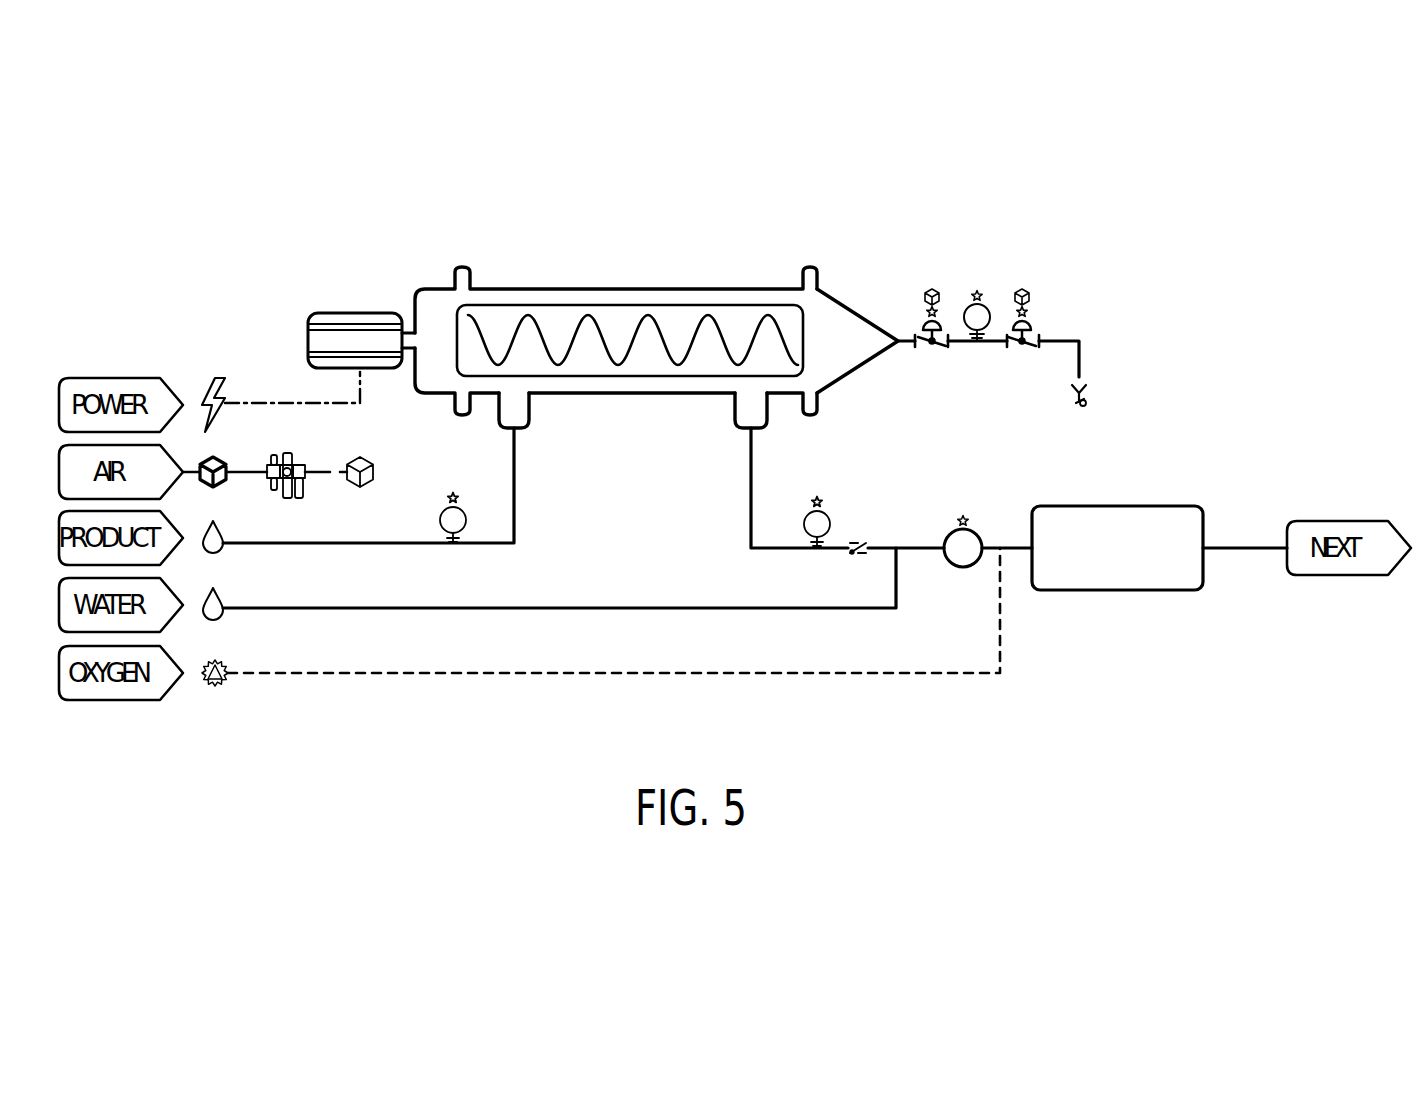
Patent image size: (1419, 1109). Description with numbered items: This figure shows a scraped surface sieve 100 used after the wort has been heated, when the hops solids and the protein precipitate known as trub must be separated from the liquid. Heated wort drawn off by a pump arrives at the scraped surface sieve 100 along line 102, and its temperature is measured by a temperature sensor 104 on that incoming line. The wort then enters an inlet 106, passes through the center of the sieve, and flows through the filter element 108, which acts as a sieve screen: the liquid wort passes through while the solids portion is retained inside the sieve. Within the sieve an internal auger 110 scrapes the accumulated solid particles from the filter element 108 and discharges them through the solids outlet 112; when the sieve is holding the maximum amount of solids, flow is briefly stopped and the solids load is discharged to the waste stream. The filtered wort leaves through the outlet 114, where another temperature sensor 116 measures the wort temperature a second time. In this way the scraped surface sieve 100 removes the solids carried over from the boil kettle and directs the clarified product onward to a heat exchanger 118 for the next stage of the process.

The scraped surface sieve 100 is at (635, 288).
The line 102 is at (368, 545).
The temperature sensor 104 is at (462, 510).
The inlet 106 is at (515, 410).
The filter element 108 is at (493, 303).
The internal auger 110 is at (725, 335).
The solids outlet 112 is at (898, 337).
The outlet 114 is at (763, 427).
The temperature sensor 116 is at (826, 512).
The heat exchanger 118 is at (1117, 590).